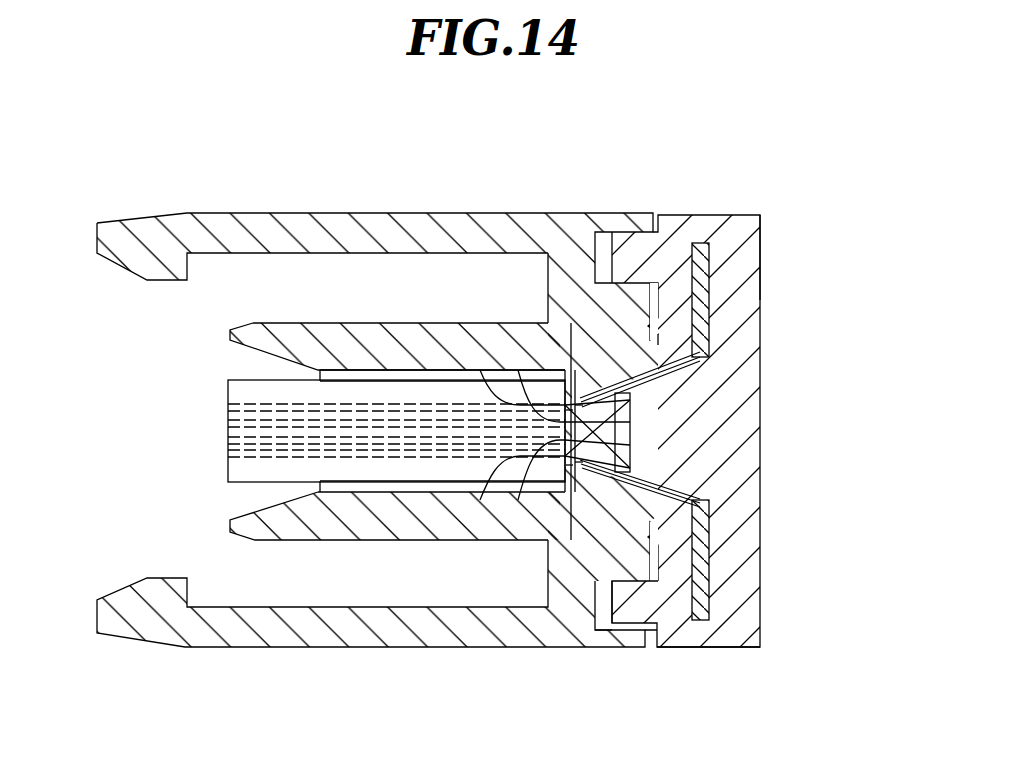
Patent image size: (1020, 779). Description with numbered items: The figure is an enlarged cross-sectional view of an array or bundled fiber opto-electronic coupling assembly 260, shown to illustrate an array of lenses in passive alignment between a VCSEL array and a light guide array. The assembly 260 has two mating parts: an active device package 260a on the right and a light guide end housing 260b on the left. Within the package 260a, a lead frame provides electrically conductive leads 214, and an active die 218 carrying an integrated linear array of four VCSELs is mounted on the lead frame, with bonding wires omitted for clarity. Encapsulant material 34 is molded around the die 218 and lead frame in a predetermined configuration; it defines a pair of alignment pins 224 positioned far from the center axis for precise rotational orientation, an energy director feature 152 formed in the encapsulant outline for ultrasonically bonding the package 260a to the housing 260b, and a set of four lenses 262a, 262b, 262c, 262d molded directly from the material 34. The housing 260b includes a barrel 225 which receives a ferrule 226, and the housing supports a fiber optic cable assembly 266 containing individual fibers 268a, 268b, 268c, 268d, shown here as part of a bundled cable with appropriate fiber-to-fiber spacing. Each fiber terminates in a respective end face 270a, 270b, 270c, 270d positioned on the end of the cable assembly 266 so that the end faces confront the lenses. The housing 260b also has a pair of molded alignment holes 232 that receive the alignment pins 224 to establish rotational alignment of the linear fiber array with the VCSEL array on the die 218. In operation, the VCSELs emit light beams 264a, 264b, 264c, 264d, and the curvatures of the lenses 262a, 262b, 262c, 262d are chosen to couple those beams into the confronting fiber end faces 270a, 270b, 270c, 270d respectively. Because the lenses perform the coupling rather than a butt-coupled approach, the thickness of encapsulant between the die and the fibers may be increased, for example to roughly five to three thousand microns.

The opto-electronic coupling assembly 260 is at (730, 114).
The active device package 260a is at (770, 224).
The light guide end housing 260b is at (258, 207).
The electrically conductive leads 214 is at (710, 312).
The energy director feature 152 is at (705, 545).
The active die 218 is at (713, 500).
The lens 262a is at (630, 400).
The lens 262b is at (630, 422).
The lens 262c is at (630, 445).
The lens 262d is at (630, 462).
The light beam 264a is at (583, 405).
The light beam 264b is at (572, 410).
The light beam 264c is at (571, 465).
The light beam 264d is at (581, 462).
The fiber end face 270a is at (518, 370).
The fiber end face 270b is at (480, 370).
The fiber end face 270c is at (480, 500).
The fiber end face 270d is at (518, 500).
The fiber 268a is at (228, 407).
The fiber 268b is at (228, 423).
The fiber 268c is at (228, 440).
The fiber 268d is at (228, 454).
The fiber optic cable assembly 266 is at (248, 489).
The ferrule 226 is at (320, 375).
The barrel 225 is at (330, 540).
The alignment holes 232 is at (599, 630).
The alignment pins 224 is at (638, 610).
The encapsulant material 34 is at (735, 647).